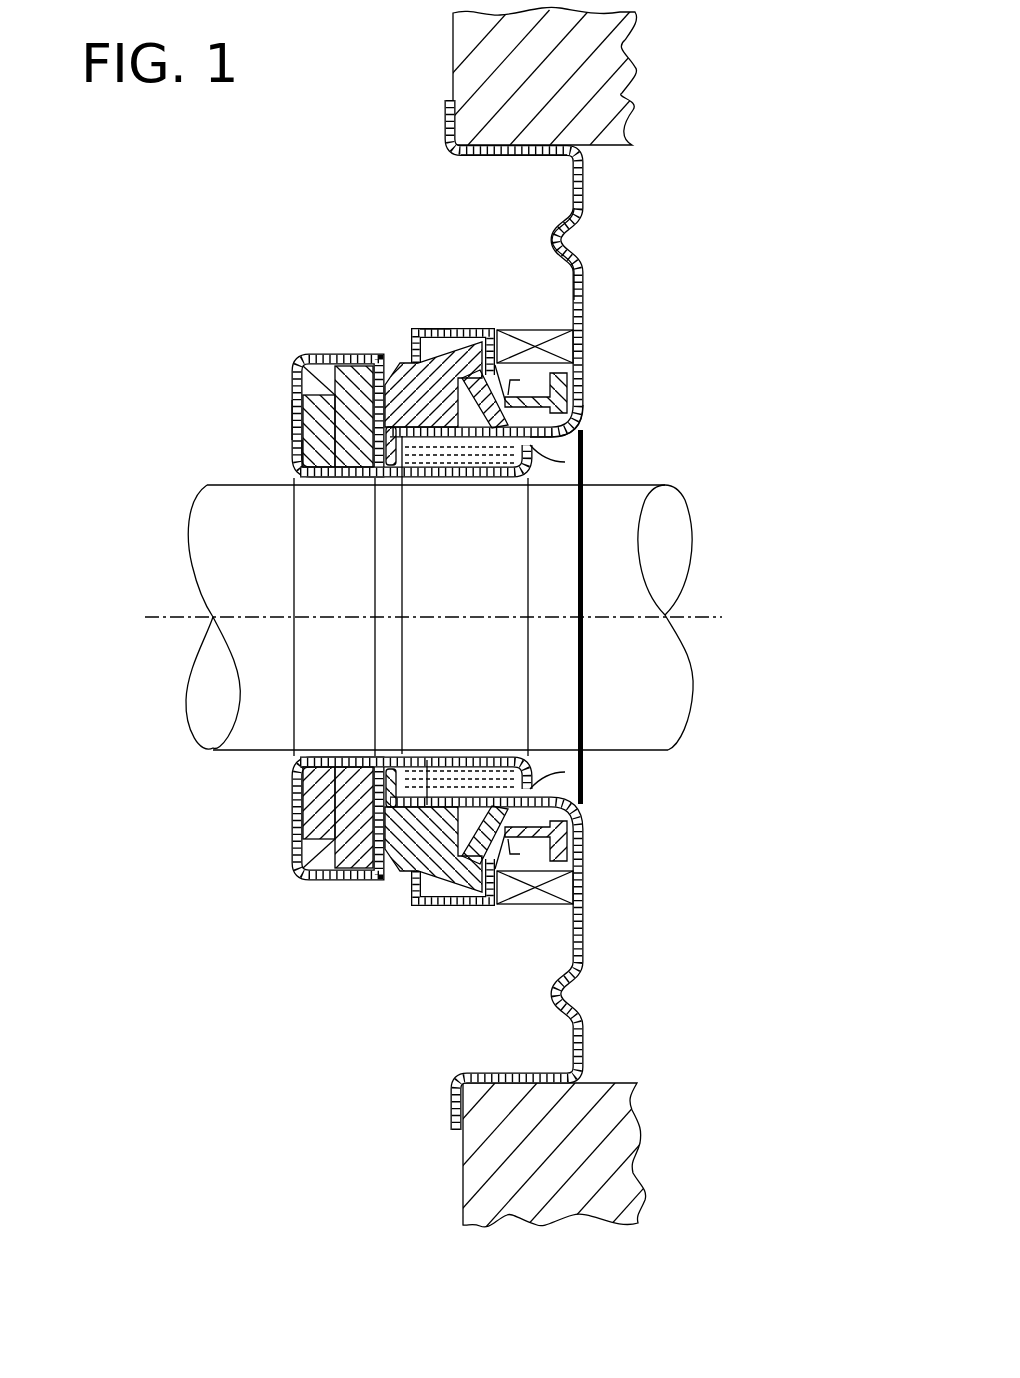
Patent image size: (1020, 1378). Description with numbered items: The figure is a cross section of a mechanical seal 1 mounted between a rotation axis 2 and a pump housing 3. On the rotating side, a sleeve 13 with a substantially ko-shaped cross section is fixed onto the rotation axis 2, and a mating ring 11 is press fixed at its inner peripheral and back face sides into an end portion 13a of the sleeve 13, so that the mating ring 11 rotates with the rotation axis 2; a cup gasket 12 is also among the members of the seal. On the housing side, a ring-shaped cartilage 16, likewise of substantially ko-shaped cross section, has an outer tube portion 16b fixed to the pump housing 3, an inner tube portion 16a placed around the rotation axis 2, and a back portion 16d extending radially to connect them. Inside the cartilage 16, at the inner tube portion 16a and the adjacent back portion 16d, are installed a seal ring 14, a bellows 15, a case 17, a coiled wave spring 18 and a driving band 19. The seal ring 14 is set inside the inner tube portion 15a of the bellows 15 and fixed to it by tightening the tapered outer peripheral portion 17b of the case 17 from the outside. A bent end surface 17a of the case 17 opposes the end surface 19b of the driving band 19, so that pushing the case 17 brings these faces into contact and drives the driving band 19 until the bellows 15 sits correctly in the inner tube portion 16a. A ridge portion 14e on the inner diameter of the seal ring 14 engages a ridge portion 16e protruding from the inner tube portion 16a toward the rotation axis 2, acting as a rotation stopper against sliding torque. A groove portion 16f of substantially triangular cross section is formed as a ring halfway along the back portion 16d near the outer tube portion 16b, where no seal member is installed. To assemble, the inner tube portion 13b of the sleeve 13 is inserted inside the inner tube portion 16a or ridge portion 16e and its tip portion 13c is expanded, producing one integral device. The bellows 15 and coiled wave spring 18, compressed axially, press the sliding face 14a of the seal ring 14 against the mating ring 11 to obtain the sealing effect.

The mechanical seal 1 is at (690, 934).
The rotation axis 2 is at (625, 565).
The pump housing 3 is at (587, 82).
The mating ring 11 is at (350, 352).
The cup gasket 12 is at (288, 360).
The sleeve 13 is at (325, 352).
The end portion 13a is at (292, 418).
The inner tube portion 13b is at (402, 490).
The tip portion 13c is at (573, 475).
The seal ring 14 is at (393, 365).
The sliding face 14a is at (300, 458).
The ridge portion 14e is at (428, 760).
The bellows 15 is at (458, 350).
The inner tube portion 15a is at (432, 450).
The cartilage 16 is at (585, 170).
The inner tube portion 16a is at (565, 460).
The outer tube portion 16b is at (497, 158).
The back portion 16d is at (585, 285).
The ridge portion 16e is at (497, 480).
The groove portion 16f is at (582, 237).
The case 17 is at (458, 326).
The end surface 17a is at (512, 358).
The outer peripheral portion 17b is at (427, 326).
The coiled wave spring 18 is at (565, 320).
The driving band 19 is at (578, 397).
The end surface 19b is at (580, 368).